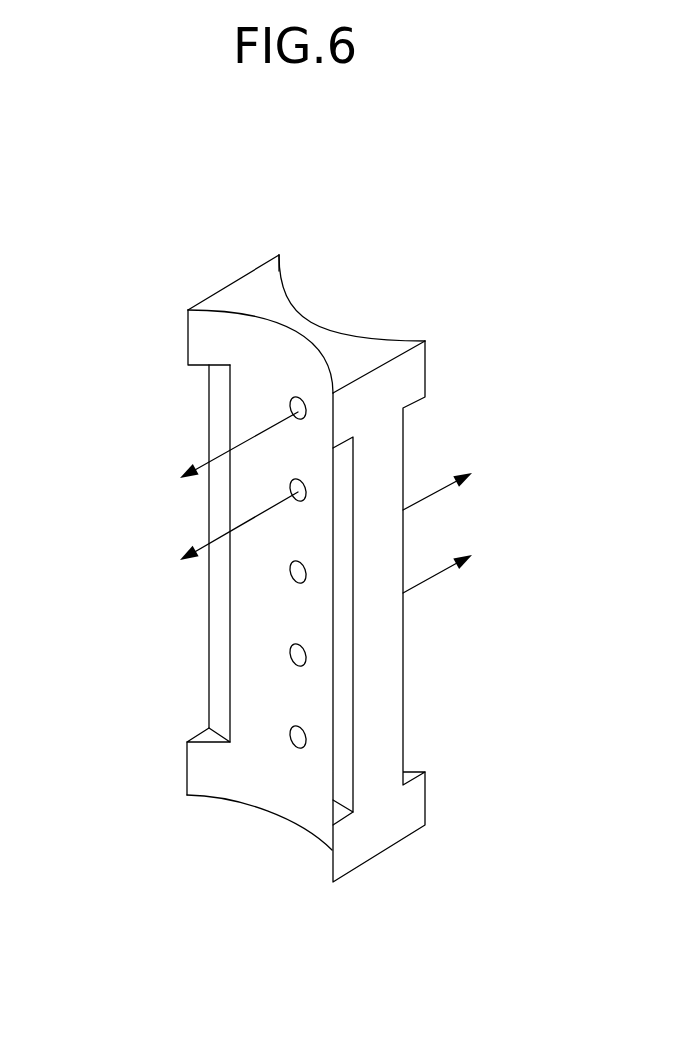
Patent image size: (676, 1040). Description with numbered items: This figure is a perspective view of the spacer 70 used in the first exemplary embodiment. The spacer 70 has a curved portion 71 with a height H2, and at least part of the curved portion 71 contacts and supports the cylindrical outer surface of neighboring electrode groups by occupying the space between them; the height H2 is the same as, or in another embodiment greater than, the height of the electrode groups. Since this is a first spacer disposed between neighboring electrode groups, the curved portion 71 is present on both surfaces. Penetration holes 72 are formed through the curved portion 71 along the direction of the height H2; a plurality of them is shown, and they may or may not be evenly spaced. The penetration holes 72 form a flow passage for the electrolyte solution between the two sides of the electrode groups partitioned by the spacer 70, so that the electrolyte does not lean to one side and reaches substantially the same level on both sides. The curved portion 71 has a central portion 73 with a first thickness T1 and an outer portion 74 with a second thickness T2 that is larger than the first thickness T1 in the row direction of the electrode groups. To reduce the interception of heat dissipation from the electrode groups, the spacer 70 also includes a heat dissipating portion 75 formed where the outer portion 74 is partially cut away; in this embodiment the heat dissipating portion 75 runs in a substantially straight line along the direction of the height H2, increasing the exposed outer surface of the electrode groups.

The spacer 70 is at (323, 532).
The curved portion 71 is at (256, 334).
The penetration holes 72 is at (297, 575).
The central portion 73 is at (298, 308).
The outer portion 74 is at (373, 355).
The heat dissipating portion 75 is at (340, 675).
The first thickness T1 is at (244, 360).
The second thickness T2 is at (333, 393).
The height H2 is at (188, 310).